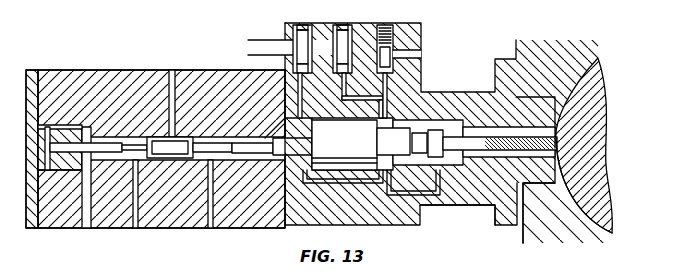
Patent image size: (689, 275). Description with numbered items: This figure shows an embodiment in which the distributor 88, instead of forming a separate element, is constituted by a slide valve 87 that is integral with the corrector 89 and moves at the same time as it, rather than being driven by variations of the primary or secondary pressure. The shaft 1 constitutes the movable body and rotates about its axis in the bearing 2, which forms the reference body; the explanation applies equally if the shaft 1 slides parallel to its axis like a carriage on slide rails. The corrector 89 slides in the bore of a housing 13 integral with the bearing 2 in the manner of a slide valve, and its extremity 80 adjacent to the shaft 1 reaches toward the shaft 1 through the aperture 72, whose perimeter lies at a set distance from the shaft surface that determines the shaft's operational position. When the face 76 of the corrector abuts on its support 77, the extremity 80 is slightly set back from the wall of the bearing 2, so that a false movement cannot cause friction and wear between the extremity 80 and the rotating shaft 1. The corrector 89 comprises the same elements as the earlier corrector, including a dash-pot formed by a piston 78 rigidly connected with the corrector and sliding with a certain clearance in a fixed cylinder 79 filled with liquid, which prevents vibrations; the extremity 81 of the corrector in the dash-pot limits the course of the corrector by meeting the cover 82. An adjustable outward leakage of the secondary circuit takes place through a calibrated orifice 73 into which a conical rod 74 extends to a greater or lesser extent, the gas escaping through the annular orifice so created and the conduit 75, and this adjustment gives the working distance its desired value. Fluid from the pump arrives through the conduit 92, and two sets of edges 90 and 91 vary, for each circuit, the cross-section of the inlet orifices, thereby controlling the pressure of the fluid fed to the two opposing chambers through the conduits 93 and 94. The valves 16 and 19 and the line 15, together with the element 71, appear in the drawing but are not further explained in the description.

The shaft 1 is at (592, 103).
The bearing 2 is at (558, 226).
The housing 13 is at (498, 216).
The pressure line 15 is at (266, 40).
The valve 16 is at (302, 36).
The valve 19 is at (344, 36).
The nut 71 is at (440, 133).
The aperture 72 is at (604, 124).
The calibrated orifice 73 is at (398, 72).
The conical rod 74 is at (400, 48).
The conduit 75 is at (424, 52).
The face of the corrector 76 is at (457, 215).
The support 77 is at (428, 135).
The piston 78 is at (63, 172).
The fixed cylinder 79 is at (52, 128).
The extremity of the corrector 80 is at (560, 145).
The extremity of the corrector in the dash-pot 81 is at (47, 135).
The cover 82 is at (46, 166).
The slide valve 87 is at (187, 140).
The distributor 88 is at (168, 213).
The corrector 89 is at (360, 141).
The set of edges 90 is at (152, 137).
The set of edges 91 is at (206, 140).
The conduit 92 is at (176, 72).
The conduit 93 is at (135, 228).
The conduit 94 is at (210, 228).